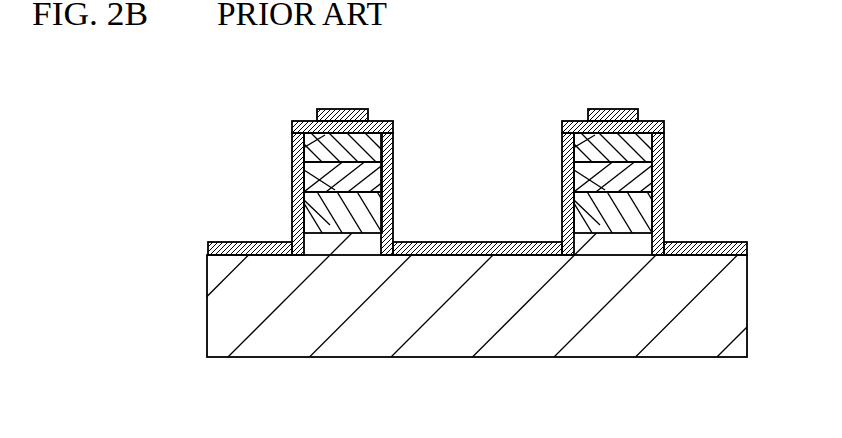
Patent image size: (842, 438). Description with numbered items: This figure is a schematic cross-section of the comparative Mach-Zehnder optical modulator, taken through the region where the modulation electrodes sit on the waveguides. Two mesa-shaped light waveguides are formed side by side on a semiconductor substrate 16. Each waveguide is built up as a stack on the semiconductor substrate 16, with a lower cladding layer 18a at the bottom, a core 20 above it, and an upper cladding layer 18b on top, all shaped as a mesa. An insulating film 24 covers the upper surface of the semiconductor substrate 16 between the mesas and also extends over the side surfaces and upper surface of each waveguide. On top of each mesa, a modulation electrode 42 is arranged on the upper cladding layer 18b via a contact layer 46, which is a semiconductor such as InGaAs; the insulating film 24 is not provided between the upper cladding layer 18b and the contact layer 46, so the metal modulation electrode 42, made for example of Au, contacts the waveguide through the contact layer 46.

The semiconductor substrate 16 is at (727, 328).
The lower cladding layer 18a is at (300, 201).
The upper cladding layer 18b is at (292, 128).
The core 20 is at (300, 163).
The insulating film 24 is at (443, 241).
The modulation electrode 42 is at (348, 108).
The contact layer 46 is at (368, 108).